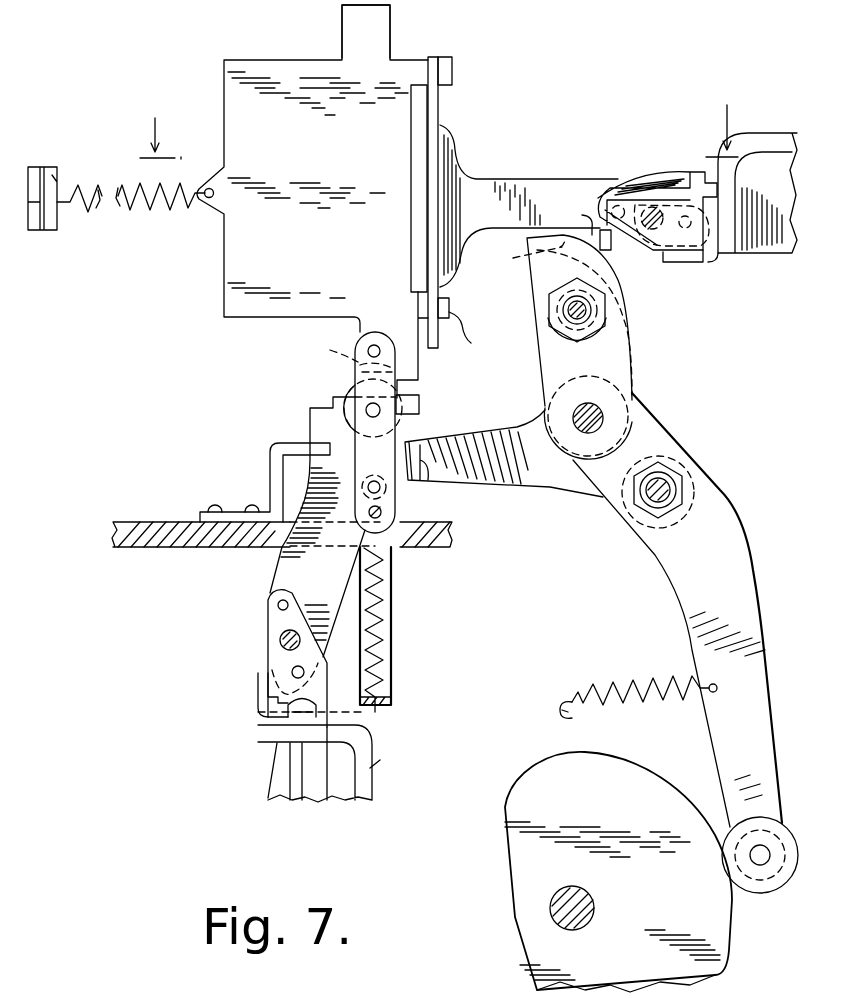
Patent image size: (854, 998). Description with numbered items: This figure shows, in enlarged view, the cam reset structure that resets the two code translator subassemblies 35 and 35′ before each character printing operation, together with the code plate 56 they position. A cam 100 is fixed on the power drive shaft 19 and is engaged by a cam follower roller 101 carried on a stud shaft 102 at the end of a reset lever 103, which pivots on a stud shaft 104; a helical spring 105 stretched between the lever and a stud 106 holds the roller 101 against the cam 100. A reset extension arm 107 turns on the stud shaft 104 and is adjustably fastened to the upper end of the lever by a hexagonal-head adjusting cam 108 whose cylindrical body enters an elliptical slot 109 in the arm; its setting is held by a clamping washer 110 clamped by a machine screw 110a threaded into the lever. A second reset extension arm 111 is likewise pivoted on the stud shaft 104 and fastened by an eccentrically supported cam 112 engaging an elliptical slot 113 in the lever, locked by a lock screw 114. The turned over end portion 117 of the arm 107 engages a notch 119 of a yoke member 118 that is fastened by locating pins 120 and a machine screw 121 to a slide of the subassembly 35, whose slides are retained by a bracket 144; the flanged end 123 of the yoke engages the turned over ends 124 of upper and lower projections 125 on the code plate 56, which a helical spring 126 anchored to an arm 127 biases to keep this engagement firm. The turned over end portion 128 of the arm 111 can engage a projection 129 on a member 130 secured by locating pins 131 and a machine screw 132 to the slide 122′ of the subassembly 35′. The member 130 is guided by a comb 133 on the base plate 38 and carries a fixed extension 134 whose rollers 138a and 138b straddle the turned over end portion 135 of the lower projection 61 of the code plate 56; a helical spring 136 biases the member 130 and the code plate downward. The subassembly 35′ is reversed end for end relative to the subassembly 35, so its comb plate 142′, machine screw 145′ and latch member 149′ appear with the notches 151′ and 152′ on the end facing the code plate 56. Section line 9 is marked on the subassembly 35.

The section line 9 is at (439, 124).
The power drive shaft 19 is at (584, 918).
The code translator subassembly 35 is at (775, 126).
The code translator subassembly 35′ is at (386, 766).
The base plate 38 is at (130, 548).
The code plate 56 is at (245, 295).
The lower projection 61 is at (418, 355).
The cam 100 is at (530, 786).
The cam follower roller 101 is at (758, 893).
The stud shaft 102 is at (768, 848).
The reset lever 103 is at (665, 552).
The stud shaft 104 is at (600, 414).
The helical spring 105 is at (638, 710).
The stud 106 is at (560, 712).
The reset extension arm 107 is at (600, 300).
The hexagonal-head adjusting cam 108 is at (550, 300).
The elliptical slot 109 is at (600, 335).
The clamping washer 110 is at (592, 315).
The machine screw 110a is at (568, 312).
The reset extension arm 111 is at (500, 490).
The eccentrically supported cam 112 is at (660, 482).
The elliptical slot 113 is at (688, 504).
The lock screw 114 is at (690, 478).
The turned over end portion 117 is at (513, 258).
The yoke member 118 is at (523, 188).
The notch 119 is at (585, 222).
The locating pins 120 is at (622, 200).
The machine screw 121 is at (650, 245).
The slide 122′ is at (275, 620).
The flanged end 123 is at (437, 107).
The turned over ends 124 is at (454, 72).
The projections 125 is at (432, 298).
The helical spring 126 is at (95, 213).
The arm 127 is at (55, 165).
The turned over end portion 128 is at (424, 470).
The projection 129 is at (420, 402).
The member 130 is at (285, 560).
The locating pins 131 is at (292, 670).
The machine screw 132 is at (280, 640).
The comb 133 is at (292, 447).
The fixed extension 134 is at (382, 513).
The turned over end portion 135 is at (358, 377).
The helical spring 136 is at (393, 567).
The roller 138a is at (396, 426).
The roller 138b is at (348, 346).
The comb plate 142′ is at (372, 790).
The bracket 144 is at (720, 258).
The machine screw 145′ is at (258, 703).
The latch member 149′ is at (262, 773).
The notch 151′ is at (355, 714).
The notch 152′ is at (345, 696).